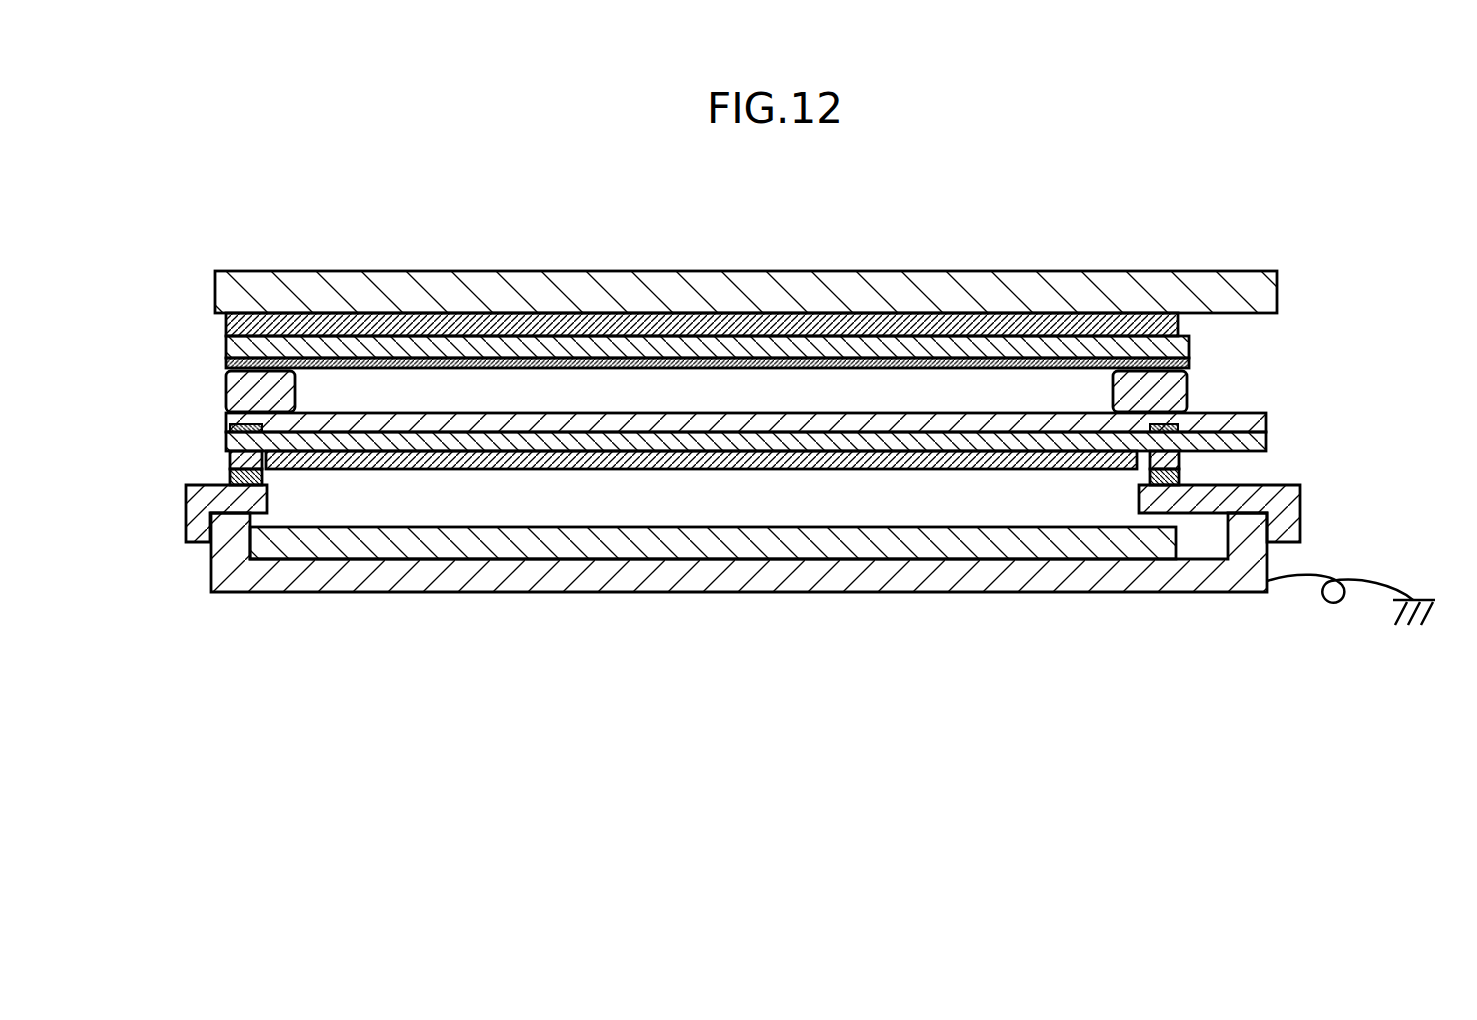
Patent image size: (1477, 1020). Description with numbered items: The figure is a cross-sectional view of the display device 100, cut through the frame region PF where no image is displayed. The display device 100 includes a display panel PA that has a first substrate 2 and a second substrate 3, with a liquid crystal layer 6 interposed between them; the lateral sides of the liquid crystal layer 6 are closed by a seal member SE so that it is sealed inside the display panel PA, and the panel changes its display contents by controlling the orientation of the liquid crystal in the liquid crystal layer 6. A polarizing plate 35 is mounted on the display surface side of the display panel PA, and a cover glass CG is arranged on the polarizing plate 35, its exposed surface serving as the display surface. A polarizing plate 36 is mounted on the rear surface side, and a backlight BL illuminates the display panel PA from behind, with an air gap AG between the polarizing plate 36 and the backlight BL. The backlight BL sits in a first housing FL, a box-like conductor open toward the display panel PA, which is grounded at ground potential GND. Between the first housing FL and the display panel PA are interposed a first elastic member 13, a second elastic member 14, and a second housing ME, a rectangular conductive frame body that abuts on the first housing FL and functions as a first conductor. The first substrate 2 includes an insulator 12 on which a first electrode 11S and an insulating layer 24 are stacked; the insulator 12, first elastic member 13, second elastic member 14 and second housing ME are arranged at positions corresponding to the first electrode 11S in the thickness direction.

The display device 100 is at (1198, 244).
The cover glass CG is at (1273, 292).
The polarizing plate 35 is at (1178, 325).
The second substrate 3 is at (228, 347).
The frame region PF is at (1190, 364).
The display panel PA is at (210, 328).
The seal member SE is at (232, 392).
The insulating layer 24 is at (1257, 422).
The first electrode 11S is at (232, 427).
The insulator 12 is at (1260, 442).
The polarizing plate 36 is at (983, 458).
The first elastic member 13 is at (228, 457).
The second elastic member 14 is at (229, 473).
The second housing ME is at (195, 503).
The first housing FL is at (1202, 582).
The backlight BL is at (1125, 548).
The air gap AG is at (903, 502).
The liquid crystal layer 6 is at (813, 400).
The first substrate 2 is at (1393, 342).
The ground potential GND is at (1426, 589).